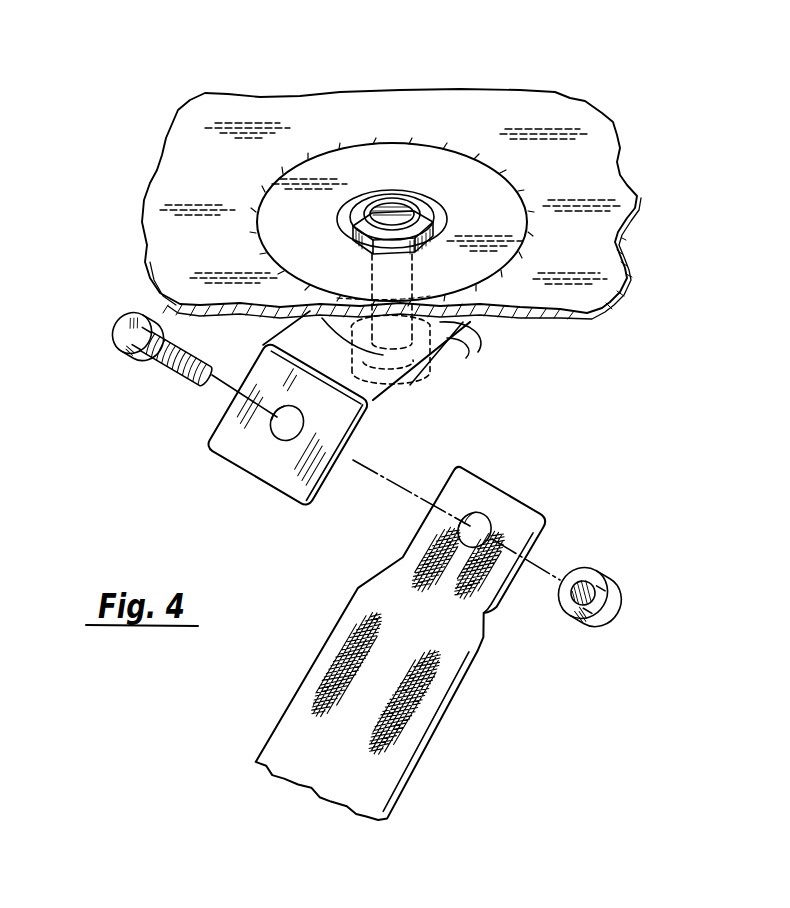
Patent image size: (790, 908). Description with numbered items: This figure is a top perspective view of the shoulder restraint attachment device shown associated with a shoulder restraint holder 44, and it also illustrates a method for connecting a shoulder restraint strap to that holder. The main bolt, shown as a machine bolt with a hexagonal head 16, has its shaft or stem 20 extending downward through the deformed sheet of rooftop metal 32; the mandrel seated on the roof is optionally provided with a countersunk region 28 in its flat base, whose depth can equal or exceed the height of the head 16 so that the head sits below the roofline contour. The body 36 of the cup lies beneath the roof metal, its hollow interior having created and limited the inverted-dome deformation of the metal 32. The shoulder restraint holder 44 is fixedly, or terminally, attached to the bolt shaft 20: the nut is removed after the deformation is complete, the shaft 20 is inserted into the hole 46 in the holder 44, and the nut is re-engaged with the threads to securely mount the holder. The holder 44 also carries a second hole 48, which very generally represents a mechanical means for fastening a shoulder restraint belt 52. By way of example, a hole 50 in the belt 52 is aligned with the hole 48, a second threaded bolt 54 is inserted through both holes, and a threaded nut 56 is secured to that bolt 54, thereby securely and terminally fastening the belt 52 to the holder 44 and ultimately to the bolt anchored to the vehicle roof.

The hexagonal head 16 is at (390, 214).
The shaft or stem 20 is at (370, 270).
The countersunk region 28 is at (344, 213).
The sheet of metal 32 is at (587, 173).
The body 36 is at (480, 349).
The shoulder restraint holder 44 is at (407, 387).
The hole 46 is at (393, 347).
The second hole 48 is at (290, 440).
The hole 50 is at (485, 520).
The shoulder restraint belt 52 is at (430, 673).
The second threaded bolt 54 is at (137, 363).
The threaded nut 56 is at (593, 567).